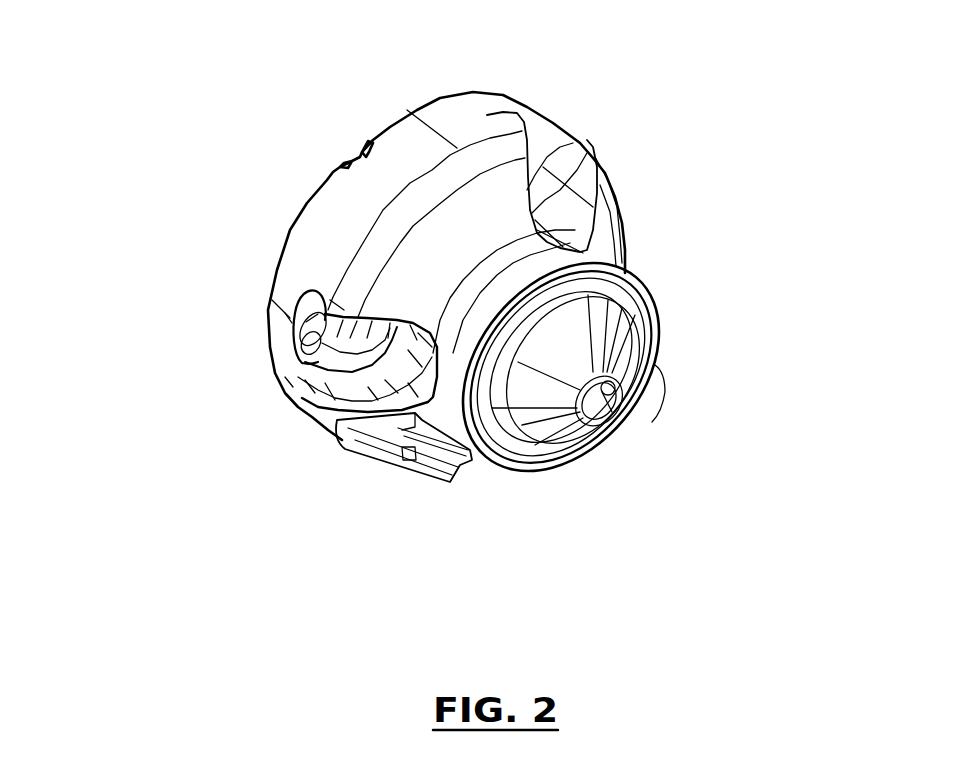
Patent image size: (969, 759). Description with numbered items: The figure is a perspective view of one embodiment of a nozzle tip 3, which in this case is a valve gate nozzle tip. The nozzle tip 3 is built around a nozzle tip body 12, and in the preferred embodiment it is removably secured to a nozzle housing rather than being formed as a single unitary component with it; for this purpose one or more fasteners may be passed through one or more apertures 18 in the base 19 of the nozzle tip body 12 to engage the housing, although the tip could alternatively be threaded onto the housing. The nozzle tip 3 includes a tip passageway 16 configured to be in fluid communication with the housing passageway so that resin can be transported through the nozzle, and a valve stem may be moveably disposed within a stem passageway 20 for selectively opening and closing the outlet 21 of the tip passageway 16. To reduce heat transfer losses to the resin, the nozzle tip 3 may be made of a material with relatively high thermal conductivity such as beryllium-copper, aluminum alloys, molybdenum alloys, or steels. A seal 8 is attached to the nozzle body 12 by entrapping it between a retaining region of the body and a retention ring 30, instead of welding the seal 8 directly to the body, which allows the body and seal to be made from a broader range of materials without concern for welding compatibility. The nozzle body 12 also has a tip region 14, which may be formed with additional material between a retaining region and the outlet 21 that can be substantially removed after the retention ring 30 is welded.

The nozzle tip 3 is at (194, 166).
The seal 8 is at (500, 473).
The nozzle tip body 12 is at (625, 210).
The tip region 14 is at (690, 275).
The tip passageway 16 is at (612, 432).
The apertures 18 is at (298, 352).
The base 19 is at (250, 395).
The stem passageway 20 is at (604, 425).
The outlet 21 is at (628, 370).
The retention ring 30 is at (642, 277).